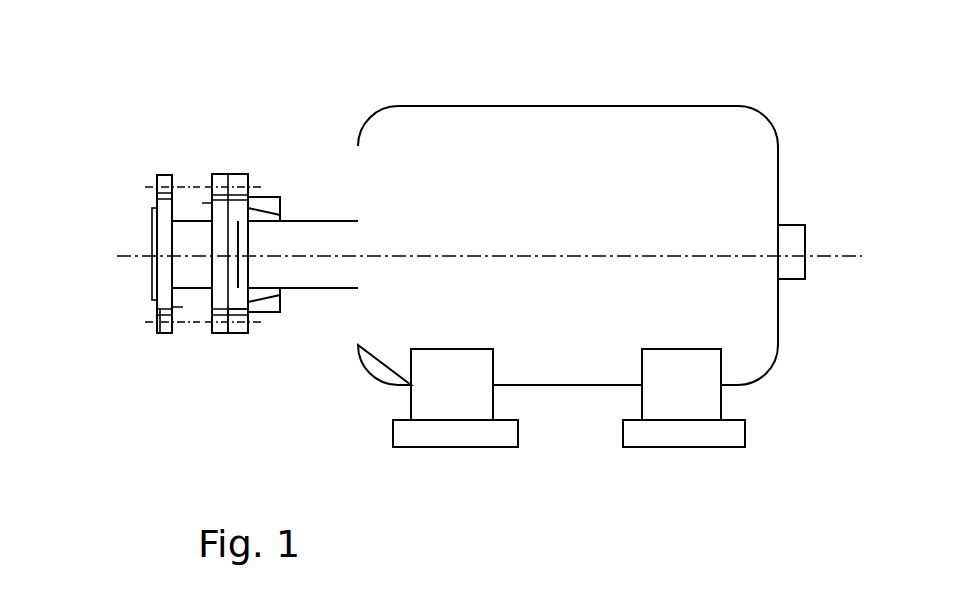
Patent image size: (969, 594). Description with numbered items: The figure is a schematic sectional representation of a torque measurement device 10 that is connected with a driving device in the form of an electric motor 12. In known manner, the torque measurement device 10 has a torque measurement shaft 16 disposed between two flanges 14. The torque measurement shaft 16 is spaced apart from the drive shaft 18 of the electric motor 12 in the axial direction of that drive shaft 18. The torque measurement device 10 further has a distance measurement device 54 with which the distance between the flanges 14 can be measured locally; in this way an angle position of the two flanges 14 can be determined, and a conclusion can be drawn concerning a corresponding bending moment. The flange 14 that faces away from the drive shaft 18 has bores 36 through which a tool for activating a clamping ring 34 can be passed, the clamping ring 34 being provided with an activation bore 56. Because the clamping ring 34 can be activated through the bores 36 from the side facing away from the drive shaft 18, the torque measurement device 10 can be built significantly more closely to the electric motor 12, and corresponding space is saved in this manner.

The torque measurement device 10 is at (201, 364).
The electric motor 12 is at (543, 128).
The flange 14 is at (163, 192).
The torque measurement shaft 16 is at (192, 235).
The drive shaft 18 is at (303, 277).
The clamping ring 34 is at (270, 203).
The bore 36 is at (168, 315).
The distance measurement device 54 is at (175, 206).
The activation bore, clamping ring 56 is at (248, 336).